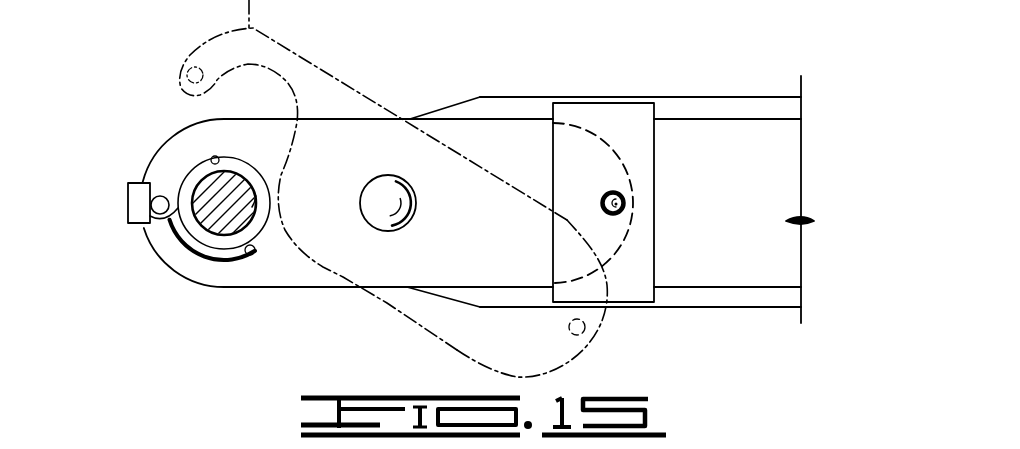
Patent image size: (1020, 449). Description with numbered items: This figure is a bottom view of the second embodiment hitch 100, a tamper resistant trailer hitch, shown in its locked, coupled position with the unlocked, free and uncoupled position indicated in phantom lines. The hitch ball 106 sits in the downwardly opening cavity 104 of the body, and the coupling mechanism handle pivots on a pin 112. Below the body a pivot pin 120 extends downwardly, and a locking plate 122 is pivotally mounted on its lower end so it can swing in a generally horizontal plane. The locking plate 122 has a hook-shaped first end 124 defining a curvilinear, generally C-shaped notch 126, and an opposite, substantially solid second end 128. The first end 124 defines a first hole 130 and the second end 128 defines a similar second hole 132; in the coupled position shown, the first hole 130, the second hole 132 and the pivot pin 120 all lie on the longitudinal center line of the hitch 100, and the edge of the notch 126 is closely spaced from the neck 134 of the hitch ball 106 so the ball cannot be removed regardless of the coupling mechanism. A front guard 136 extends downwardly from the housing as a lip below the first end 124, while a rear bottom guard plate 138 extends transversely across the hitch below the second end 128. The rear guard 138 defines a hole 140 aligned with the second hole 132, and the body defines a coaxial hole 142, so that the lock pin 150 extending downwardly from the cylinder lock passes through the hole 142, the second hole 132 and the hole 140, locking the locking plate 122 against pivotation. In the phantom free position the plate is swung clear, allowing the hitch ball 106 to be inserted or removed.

The second embodiment hitch 100 is at (617, 49).
The cavity 104 is at (247, 258).
The hitch ball 106 is at (222, 198).
The pin 112 is at (193, 265).
The pivot pin 120 is at (382, 212).
The locking plate 122 is at (293, 95).
The first end 124 is at (147, 182).
The notch 126 is at (215, 159).
The second end 128 is at (630, 162).
The first hole 130 is at (165, 222).
The second hole 132 is at (588, 340).
The neck 134 is at (256, 196).
The front guard 136 is at (140, 203).
The rear bottom guard plate 138 is at (633, 288).
The hole 140 is at (622, 212).
The hole 142 is at (771, 239).
The lock pin 150 is at (627, 197).